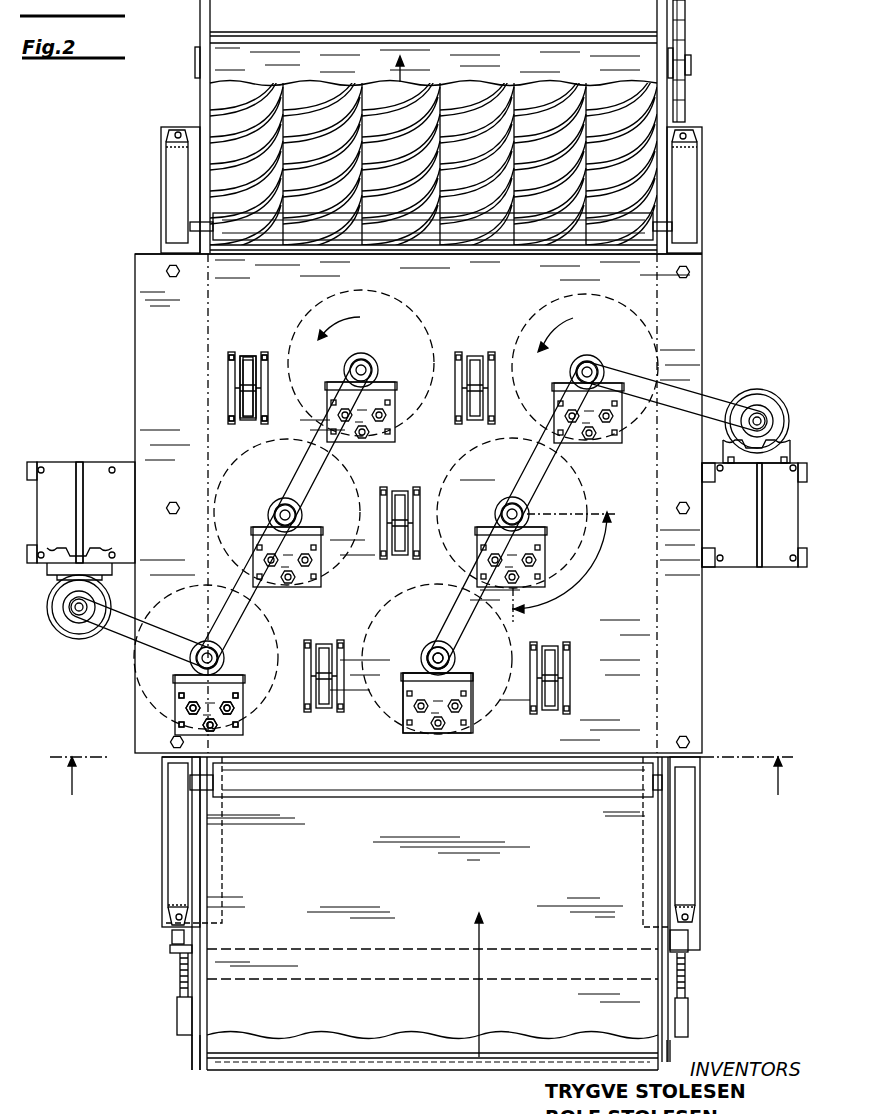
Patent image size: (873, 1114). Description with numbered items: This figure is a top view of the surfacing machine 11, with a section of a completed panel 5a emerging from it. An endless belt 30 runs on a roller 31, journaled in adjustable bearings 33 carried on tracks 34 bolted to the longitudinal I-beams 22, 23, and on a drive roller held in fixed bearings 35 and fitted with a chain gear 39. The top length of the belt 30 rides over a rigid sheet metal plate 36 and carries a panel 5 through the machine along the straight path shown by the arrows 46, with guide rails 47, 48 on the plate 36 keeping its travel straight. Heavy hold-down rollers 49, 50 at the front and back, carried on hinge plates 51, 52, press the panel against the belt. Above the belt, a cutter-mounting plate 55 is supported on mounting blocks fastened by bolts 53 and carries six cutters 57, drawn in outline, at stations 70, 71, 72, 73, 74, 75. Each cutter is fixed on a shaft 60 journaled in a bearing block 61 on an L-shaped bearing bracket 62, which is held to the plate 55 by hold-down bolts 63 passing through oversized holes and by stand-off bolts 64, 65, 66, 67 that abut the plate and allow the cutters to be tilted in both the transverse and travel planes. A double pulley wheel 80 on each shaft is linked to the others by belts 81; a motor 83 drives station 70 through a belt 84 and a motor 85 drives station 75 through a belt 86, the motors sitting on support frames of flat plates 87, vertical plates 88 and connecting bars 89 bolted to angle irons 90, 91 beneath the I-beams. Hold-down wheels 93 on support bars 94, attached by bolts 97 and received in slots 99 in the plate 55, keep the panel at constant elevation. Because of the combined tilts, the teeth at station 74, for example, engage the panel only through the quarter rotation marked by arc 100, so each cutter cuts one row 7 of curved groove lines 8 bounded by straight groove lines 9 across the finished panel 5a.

The panel 5 is at (396, 1040).
The completed panel 5a is at (461, 84).
The rows 7 is at (622, 83).
The curved groove lines 8 is at (250, 105).
The straight groove lines 9 is at (290, 82).
The surfacing machine 11 is at (722, 164).
The longitudinal I-beam 22 is at (168, 935).
The longitudinal I-beam 23 is at (690, 935).
The endless belt 30 is at (366, 33).
The roller 31 is at (675, 975).
The adjustable bearings 33 is at (177, 1015).
The tracks 34 is at (192, 1050).
The fixed bearings 35 is at (194, 66).
The sheet metal plate 36 is at (170, 952).
The chain gear 39 is at (687, 100).
The arrows 46 is at (490, 936).
The guide rail 47 is at (210, 1072).
The guide rail 48 is at (640, 1050).
The hold-down roller 49 is at (240, 800).
The hold-down roller 50 is at (238, 215).
The hinge plate 51 is at (695, 845).
The hinge plate 52 is at (695, 200).
The bolts 53 is at (167, 274).
The cutter-mounting plate 55 is at (703, 688).
The cutters 57 is at (350, 465).
The shaft 60 is at (433, 655).
The bearing block 61 is at (472, 676).
The bearing bracket 62 is at (473, 712).
The hold-down bolts 63 is at (189, 708).
The stand-off bolt 64 is at (180, 694).
The stand-off bolt 65 is at (180, 724).
The stand-off bolt 66 is at (240, 724).
The stand-off bolt 67 is at (240, 694).
The station 70 is at (228, 672).
The station 71 is at (300, 512).
The station 72 is at (372, 366).
The station 73 is at (456, 672).
The station 74 is at (526, 517).
The station 75 is at (592, 361).
The double pulley wheel 80 is at (428, 662).
The belts 81 is at (280, 583).
The motor 83 is at (70, 640).
The belt 84 is at (128, 660).
The motor 85 is at (786, 400).
The belt 86 is at (703, 382).
The flat plates 87 is at (90, 462).
The vertical plates 88 is at (68, 548).
The connecting bars 89 is at (85, 492).
The angle iron 90 is at (47, 575).
The angle iron 91 is at (30, 462).
The hold-down wheels 93 is at (248, 357).
The support bars 94 is at (228, 395).
The bolts 97 is at (265, 356).
The slots 99 is at (243, 356).
The arc 100 is at (583, 590).